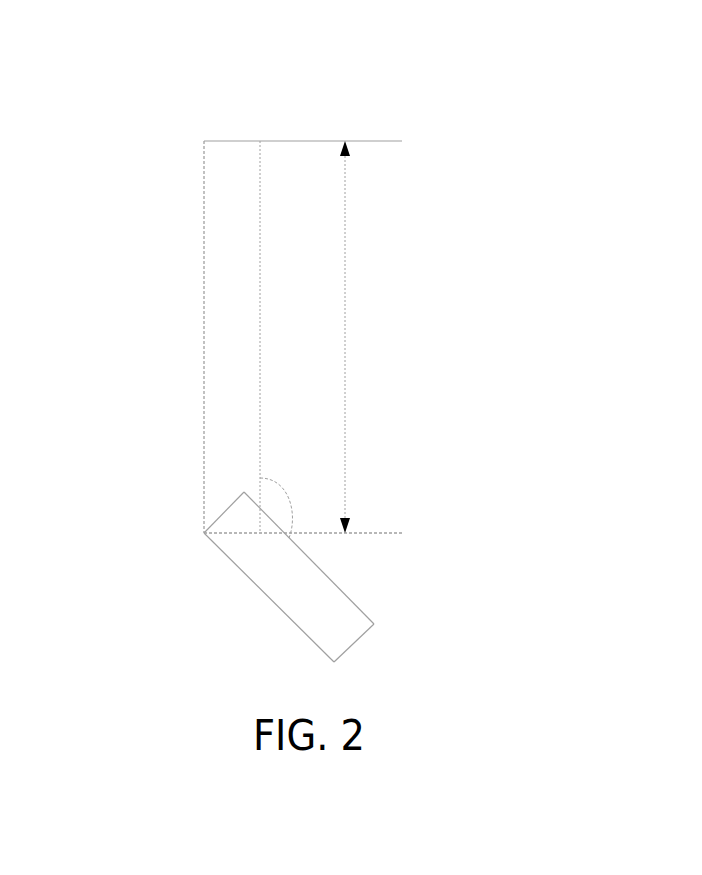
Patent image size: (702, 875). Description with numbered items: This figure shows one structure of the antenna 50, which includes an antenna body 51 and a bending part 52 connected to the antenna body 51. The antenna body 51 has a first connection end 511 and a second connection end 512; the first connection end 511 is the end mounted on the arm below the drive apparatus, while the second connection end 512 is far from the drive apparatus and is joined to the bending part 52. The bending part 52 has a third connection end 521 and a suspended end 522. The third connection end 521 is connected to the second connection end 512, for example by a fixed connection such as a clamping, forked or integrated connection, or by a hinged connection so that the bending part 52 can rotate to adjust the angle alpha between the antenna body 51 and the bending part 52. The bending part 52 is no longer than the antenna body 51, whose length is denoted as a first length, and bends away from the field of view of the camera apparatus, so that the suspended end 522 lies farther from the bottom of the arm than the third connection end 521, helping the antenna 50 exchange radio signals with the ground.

The antenna 50 is at (293, 62).
The antenna body 51 is at (232, 305).
The first connection end 511 is at (232, 137).
The second connection end 512 is at (233, 535).
The bending part 52 is at (290, 588).
The third connection end 521 is at (227, 512).
The suspended end 522 is at (355, 642).